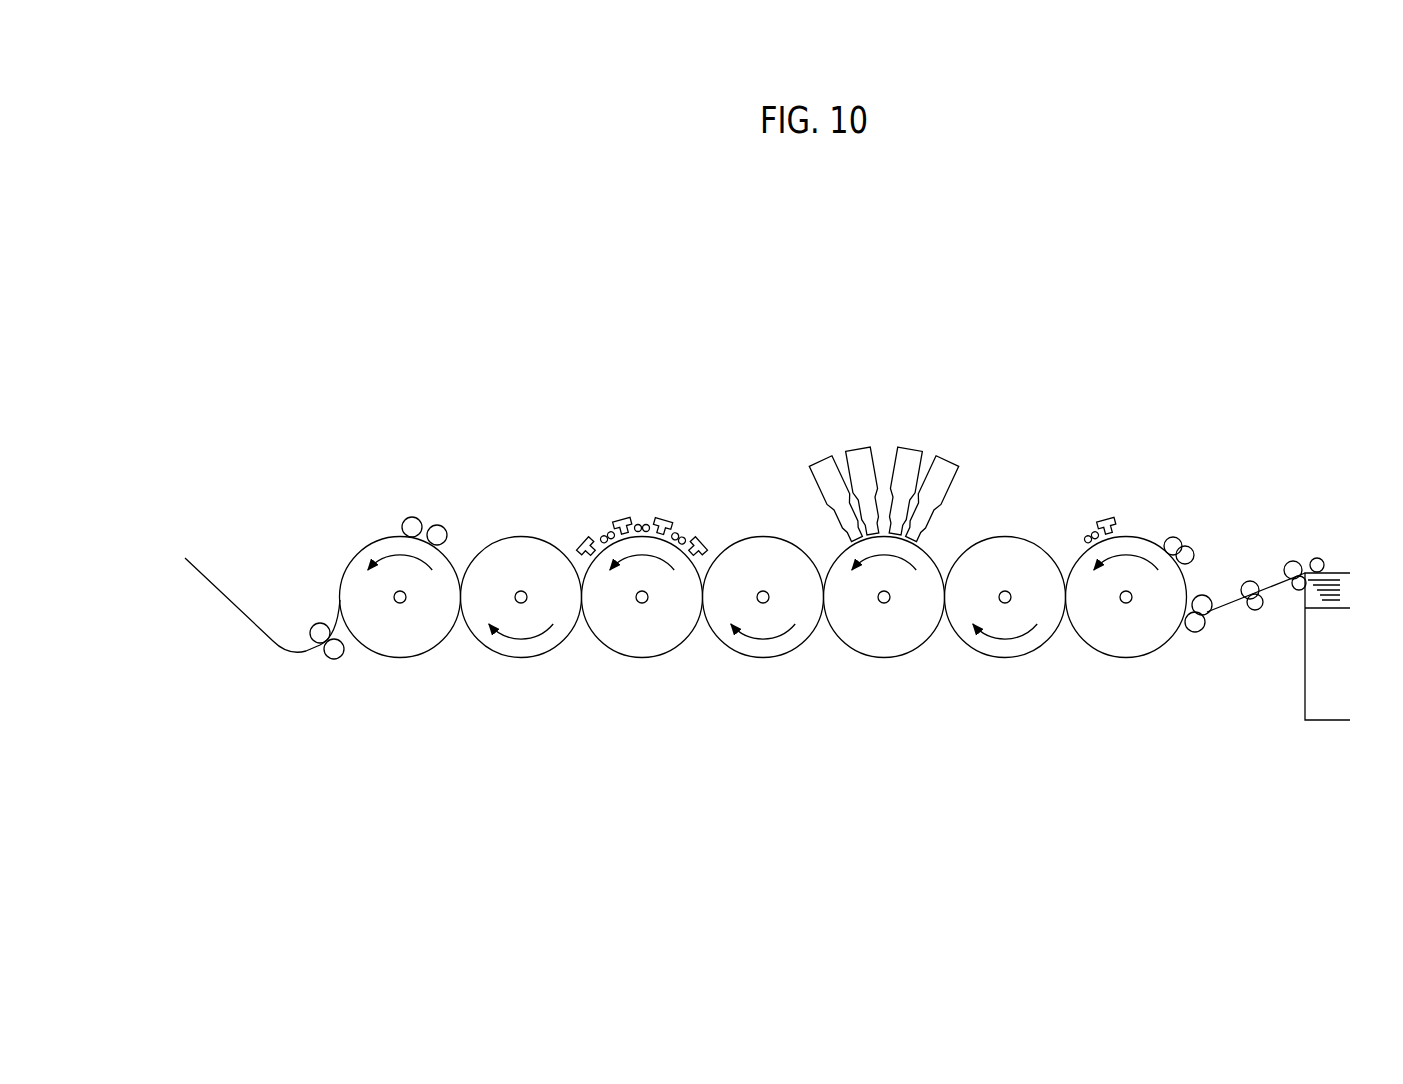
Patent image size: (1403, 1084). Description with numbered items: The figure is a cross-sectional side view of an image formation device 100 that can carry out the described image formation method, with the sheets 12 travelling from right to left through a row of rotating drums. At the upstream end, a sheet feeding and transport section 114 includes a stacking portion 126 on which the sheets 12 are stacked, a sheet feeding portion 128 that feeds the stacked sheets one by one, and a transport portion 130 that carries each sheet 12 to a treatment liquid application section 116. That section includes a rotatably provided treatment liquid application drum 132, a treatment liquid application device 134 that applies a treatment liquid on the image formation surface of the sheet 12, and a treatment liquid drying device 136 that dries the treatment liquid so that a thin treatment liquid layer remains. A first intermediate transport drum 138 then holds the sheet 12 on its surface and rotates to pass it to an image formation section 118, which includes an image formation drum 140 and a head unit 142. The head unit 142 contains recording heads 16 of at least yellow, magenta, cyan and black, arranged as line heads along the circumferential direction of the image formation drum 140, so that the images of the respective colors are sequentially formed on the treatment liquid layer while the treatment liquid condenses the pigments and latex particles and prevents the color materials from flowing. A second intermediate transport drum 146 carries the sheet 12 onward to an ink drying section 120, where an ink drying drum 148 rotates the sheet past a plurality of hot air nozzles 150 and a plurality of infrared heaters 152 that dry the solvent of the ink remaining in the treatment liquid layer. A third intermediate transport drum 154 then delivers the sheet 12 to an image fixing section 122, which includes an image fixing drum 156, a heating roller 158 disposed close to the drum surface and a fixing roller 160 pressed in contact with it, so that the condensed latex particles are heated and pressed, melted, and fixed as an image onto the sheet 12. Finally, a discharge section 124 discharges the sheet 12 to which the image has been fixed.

The image formation device 100 is at (495, 399).
The sheet 12 is at (1342, 573).
The recording head 16 is at (977, 410).
The sheet feeding and transport section 114 is at (1276, 623).
The treatment liquid application section 116 is at (1141, 567).
The image formation section 118 is at (916, 446).
The ink drying section 120 is at (666, 563).
The image fixing section 122 is at (454, 485).
The discharge section 124 is at (222, 566).
The stacking portion 126 is at (1328, 718).
The sheet feeding portion 128 is at (1317, 558).
The transport portion 130 is at (1204, 631).
The treatment liquid application drum 132 is at (1130, 650).
The treatment liquid application device 134 is at (1173, 537).
The treatment liquid drying device 136 is at (1118, 502).
The first intermediate transport drum 138 is at (1003, 539).
The image formation drum 140 is at (887, 650).
The head unit 142 is at (885, 455).
The second intermediate transport drum 146 is at (759, 539).
The ink drying drum 148 is at (645, 650).
The hot air nozzle 150 is at (702, 542).
The infrared heater 152 is at (642, 527).
The third intermediate transport drum 154 is at (516, 539).
The image fixing drum 156 is at (400, 652).
The heating roller 158 is at (439, 525).
The fixing roller 160 is at (412, 517).